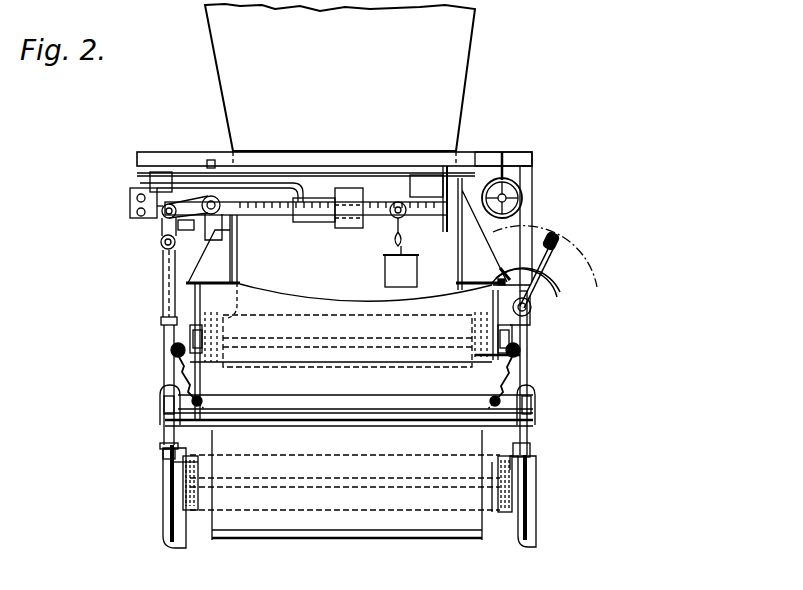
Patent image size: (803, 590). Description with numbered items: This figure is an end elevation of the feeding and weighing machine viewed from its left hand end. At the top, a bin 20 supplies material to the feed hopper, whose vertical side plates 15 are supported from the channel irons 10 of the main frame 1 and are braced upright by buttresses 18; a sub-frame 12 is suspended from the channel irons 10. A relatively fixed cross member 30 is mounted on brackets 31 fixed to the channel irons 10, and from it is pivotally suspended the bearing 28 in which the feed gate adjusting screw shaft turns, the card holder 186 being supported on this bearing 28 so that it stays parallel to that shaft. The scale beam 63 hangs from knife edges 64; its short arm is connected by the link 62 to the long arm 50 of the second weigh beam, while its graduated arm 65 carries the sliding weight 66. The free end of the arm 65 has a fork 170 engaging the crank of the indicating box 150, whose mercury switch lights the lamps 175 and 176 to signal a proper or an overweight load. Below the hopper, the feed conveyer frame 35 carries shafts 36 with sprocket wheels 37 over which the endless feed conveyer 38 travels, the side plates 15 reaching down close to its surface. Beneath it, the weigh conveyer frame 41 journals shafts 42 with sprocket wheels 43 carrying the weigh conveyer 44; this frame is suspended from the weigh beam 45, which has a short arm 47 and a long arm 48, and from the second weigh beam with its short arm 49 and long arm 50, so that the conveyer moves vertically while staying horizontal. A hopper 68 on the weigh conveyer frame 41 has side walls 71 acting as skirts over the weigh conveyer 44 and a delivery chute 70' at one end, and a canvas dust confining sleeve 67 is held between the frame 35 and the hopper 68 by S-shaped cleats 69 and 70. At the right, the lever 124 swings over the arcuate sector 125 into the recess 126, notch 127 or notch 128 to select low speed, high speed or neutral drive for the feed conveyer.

The bin 20 is at (340, 77).
The cross member 30 is at (487, 152).
The brackets 31 is at (168, 172).
The card holder 186 is at (506, 153).
The bearing 28 is at (517, 191).
The electric lamp 176 is at (130, 192).
The electric lamp 175 is at (130, 213).
The scale beam 63 is at (222, 204).
The knife edges 64 is at (222, 222).
The scale beam arm 65 is at (316, 216).
The sliding weight 66 is at (352, 229).
The box 150 is at (406, 218).
The fork 170 is at (417, 270).
The buttresses 18 is at (222, 242).
The side plates 15 is at (238, 264).
The channel irons 10 is at (200, 296).
The link 62 is at (163, 287).
The main frame 1 is at (195, 303).
The lever 124 is at (560, 244).
The arcuate sector 125 is at (530, 312).
The recess 126 is at (500, 270).
The notch 128 is at (548, 276).
The notch 127 is at (572, 292).
The feed conveyer 38 is at (410, 314).
The shafts 36 is at (314, 342).
The sprocket wheels 37 is at (212, 366).
The feed conveyer frame 35 is at (514, 343).
The S-shaped cleat 69 is at (171, 351).
The dust confining sleeve 67 is at (186, 377).
The hopper 68 is at (490, 400).
The weigh beam 45 is at (320, 428).
The long arm 50 is at (160, 400).
The S-shaped cleat 70 is at (145, 406).
The long arm 48 is at (162, 432).
The short arm 49 is at (537, 401).
The short arm 47 is at (532, 432).
The side walls 71 is at (212, 446).
The weigh conveyer 44 is at (386, 457).
The shafts 42 is at (322, 483).
The sprocket wheels 43 is at (183, 489).
The sub-frame 12 is at (163, 513).
The weigh conveyer frame 41 is at (486, 520).
The delivery chute 70' is at (347, 550).